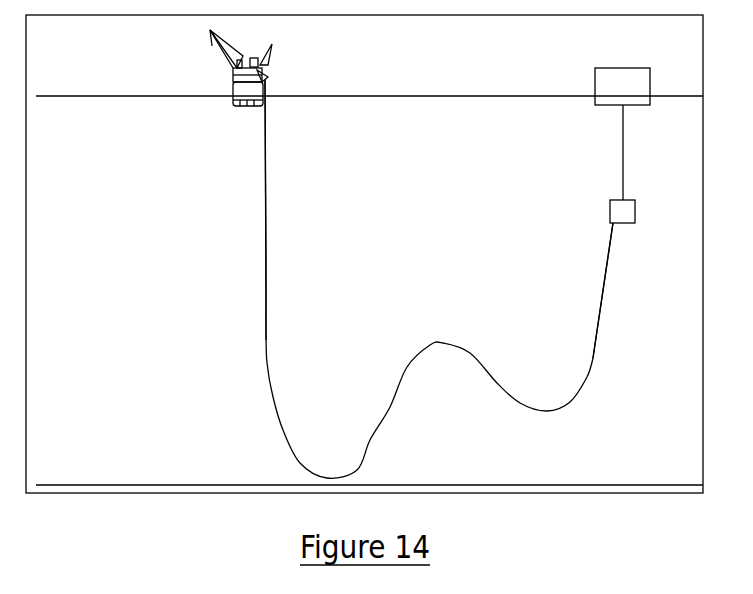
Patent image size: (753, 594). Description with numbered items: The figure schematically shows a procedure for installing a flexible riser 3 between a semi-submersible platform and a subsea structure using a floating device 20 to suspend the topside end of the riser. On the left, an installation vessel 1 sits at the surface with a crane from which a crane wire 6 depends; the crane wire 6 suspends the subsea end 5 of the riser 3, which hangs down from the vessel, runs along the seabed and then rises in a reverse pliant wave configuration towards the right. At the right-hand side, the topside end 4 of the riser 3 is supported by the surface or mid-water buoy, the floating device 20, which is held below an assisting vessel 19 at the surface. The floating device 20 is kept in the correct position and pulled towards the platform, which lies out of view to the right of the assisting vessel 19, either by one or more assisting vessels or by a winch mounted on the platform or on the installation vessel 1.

The installation vessel 1 is at (235, 82).
The flexible riser 3 is at (390, 407).
The topside end 4 is at (618, 224).
The subsea end 5 is at (266, 305).
The crane wire 6 is at (266, 226).
The assisting vessel 19 is at (601, 106).
The floating device 20 is at (610, 212).